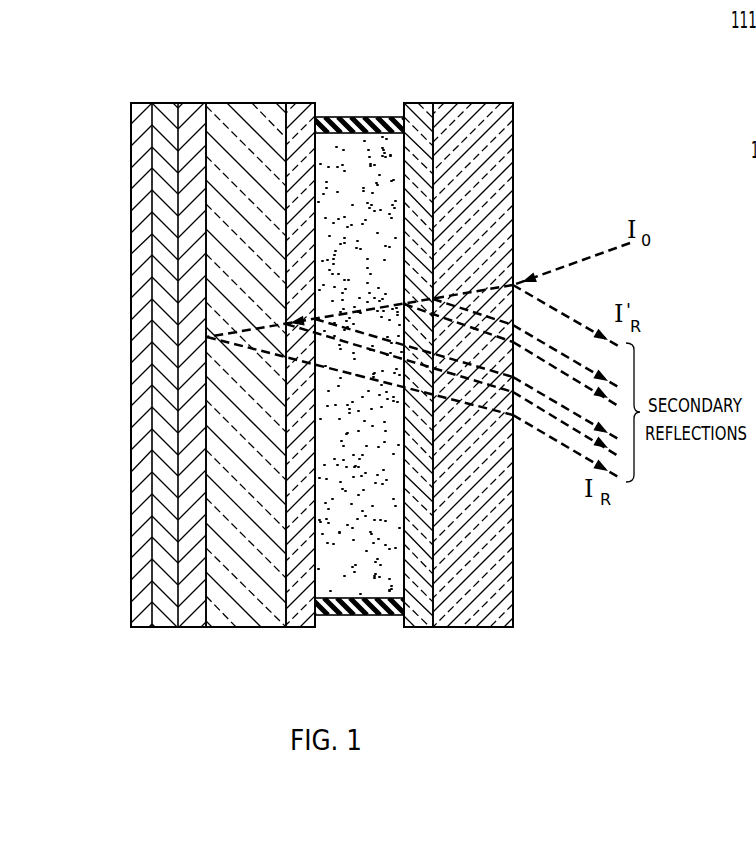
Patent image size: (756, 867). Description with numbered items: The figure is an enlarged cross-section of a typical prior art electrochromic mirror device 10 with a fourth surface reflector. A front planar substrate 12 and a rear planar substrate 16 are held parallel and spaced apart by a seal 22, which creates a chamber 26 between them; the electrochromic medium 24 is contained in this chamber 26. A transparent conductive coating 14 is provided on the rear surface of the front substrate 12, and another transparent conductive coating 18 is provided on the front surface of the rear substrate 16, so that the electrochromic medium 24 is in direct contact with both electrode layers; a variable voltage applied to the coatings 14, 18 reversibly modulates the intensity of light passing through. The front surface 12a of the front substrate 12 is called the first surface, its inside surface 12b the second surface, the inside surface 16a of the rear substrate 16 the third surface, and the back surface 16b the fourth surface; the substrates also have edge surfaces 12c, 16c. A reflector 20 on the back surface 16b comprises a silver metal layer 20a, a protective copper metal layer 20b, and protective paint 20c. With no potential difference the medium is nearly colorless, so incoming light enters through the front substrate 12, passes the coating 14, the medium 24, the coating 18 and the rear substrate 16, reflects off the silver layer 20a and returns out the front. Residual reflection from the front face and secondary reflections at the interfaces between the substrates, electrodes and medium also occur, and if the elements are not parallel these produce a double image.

The electrochromic mirror device 10 is at (553, 62).
The front planar substrate 12 is at (495, 118).
The front surface of the front substrate 12a is at (513, 155).
The inside surface of the front substrate 12b is at (436, 228).
The edge surface of the front substrate 12c is at (478, 628).
The transparent conductive coating 14 is at (422, 620).
The rear planar substrate 16 is at (217, 587).
The inside surface of the rear substrate 16a is at (298, 497).
The back surface of the rear substrate 16b is at (203, 425).
The edge surface of the rear substrate 16c is at (258, 628).
The transparent conductive coating 18 is at (302, 618).
The reflector 20 is at (206, 95).
The silver metal layer 20a is at (177, 146).
The protective copper metal layer 20b is at (157, 213).
The protective paint 20c is at (135, 273).
The seal 22 is at (356, 118).
The electrochromic medium 24 is at (378, 585).
The chamber 26 is at (365, 500).